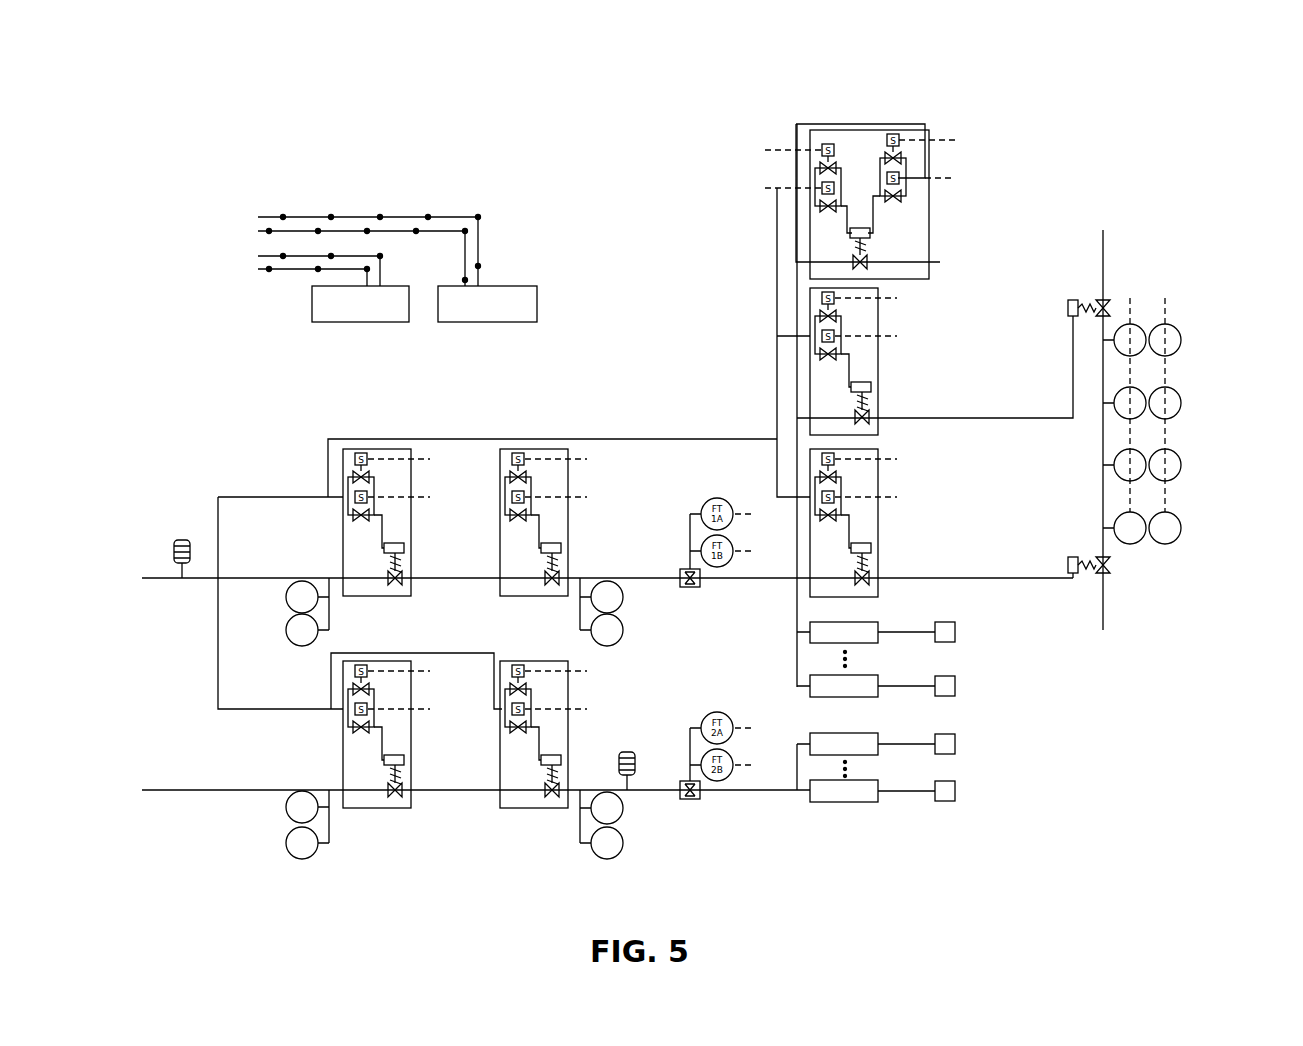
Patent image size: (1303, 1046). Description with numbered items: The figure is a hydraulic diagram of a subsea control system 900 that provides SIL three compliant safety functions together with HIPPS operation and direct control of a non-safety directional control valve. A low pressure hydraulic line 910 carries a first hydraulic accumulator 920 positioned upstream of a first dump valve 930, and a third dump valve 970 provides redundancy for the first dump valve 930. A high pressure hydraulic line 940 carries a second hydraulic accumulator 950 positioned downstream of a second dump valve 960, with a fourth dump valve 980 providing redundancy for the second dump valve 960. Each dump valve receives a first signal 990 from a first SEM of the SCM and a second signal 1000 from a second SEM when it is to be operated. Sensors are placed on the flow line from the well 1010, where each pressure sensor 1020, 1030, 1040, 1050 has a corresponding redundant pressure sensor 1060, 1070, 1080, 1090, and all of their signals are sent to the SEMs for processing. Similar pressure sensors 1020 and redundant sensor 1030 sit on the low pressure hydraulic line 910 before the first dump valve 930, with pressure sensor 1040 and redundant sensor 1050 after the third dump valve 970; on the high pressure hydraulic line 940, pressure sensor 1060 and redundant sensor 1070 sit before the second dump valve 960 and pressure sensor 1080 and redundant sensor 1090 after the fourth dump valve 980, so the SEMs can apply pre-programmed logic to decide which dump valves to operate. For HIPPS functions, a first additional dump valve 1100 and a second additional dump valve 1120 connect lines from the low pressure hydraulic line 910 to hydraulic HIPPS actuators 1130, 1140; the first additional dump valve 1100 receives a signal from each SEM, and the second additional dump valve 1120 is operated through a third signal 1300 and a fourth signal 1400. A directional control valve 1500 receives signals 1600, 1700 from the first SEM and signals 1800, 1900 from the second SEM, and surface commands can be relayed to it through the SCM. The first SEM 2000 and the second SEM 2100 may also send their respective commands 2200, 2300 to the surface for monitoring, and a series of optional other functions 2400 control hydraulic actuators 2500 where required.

The system 900 is at (1168, 95).
The low pressure hydraulic line 910 is at (155, 580).
The first hydraulic accumulator 920 is at (174, 540).
The first dump valve 930 is at (357, 449).
The high pressure hydraulic line 940 is at (160, 792).
The second hydraulic accumulator 950 is at (637, 768).
The second dump valve 960 is at (353, 808).
The third dump valve 970 is at (548, 402).
The fourth dump valve 980 is at (530, 812).
The first signal 990 is at (430, 459).
The second signal 1000 is at (430, 497).
The flow line from the well 1010 is at (1107, 612).
The pressure sensor 1020 is at (288, 598).
The redundant pressure sensor 1030 is at (290, 634).
The pressure sensor 1040 is at (634, 598).
The redundant pressure sensor 1050 is at (634, 632).
The pressure sensor 1060 is at (293, 810).
The redundant pressure sensor 1070 is at (283, 847).
The pressure sensor 1080 is at (632, 812).
The redundant pressure sensor 1090 is at (632, 847).
The first additional dump valve 1100 is at (810, 308).
The second additional dump valve 1120 is at (860, 597).
The hydraulic HIPPS actuator 1130 is at (1065, 304).
The hydraulic HIPPS actuator 1140 is at (1073, 580).
The third signal 1300 is at (887, 300).
The fourth signal 1400 is at (887, 340).
The directional control valve 1500 is at (855, 128).
The signal 1600 is at (785, 152).
The signal 1700 is at (945, 140).
The signal 1800 is at (770, 186).
The signal 1900 is at (945, 178).
The first SEM 2000 is at (333, 323).
The second SEM 2100 is at (490, 323).
The commands 2200 is at (297, 256).
The commands 2300 is at (311, 215).
The optional other functions 2400 is at (805, 634).
The hydraulic actuators 2500 is at (1000, 700).